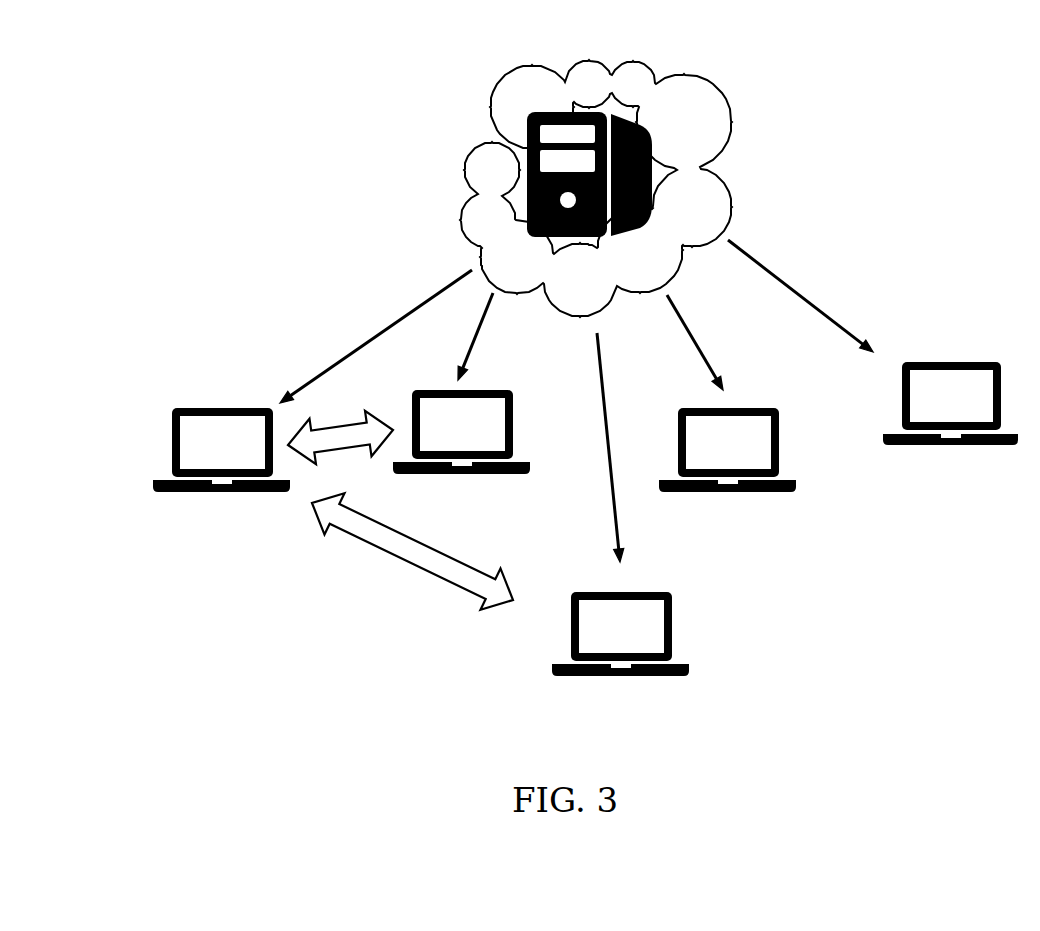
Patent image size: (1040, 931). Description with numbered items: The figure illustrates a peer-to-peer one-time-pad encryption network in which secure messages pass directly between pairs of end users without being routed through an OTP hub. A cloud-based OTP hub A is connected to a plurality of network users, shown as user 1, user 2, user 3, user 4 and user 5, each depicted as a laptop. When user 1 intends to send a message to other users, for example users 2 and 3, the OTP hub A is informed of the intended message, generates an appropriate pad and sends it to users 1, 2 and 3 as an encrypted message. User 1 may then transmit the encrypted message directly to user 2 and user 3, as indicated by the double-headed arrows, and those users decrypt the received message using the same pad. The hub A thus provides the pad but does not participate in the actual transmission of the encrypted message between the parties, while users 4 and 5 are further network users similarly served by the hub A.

The OTP hub A is at (575, 174).
The user 1 is at (221, 450).
The user 2 is at (461, 432).
The user 3 is at (620, 634).
The user 4 is at (727, 450).
The user 5 is at (950, 403).